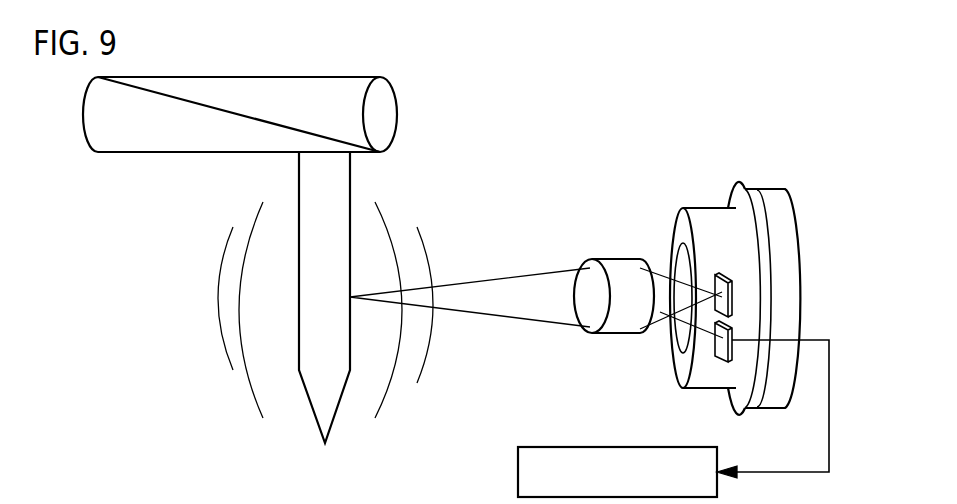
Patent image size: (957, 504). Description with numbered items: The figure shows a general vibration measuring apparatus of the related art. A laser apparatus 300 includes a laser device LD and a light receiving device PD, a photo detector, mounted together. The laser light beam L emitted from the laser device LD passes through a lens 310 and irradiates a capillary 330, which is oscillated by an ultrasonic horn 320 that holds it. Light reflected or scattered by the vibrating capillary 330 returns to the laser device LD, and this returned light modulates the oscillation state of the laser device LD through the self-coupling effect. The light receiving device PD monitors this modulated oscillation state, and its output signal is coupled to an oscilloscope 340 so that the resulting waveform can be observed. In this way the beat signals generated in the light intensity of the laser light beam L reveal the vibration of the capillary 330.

The laser apparatus 300 is at (765, 189).
The lens 310 is at (620, 259).
The ultrasonic horn 320 is at (384, 118).
The capillary 330 is at (351, 173).
The oscilloscope 340 is at (518, 471).
The laser device LD is at (716, 274).
The light receiving device PD is at (722, 358).
The laser light beam L is at (660, 272).